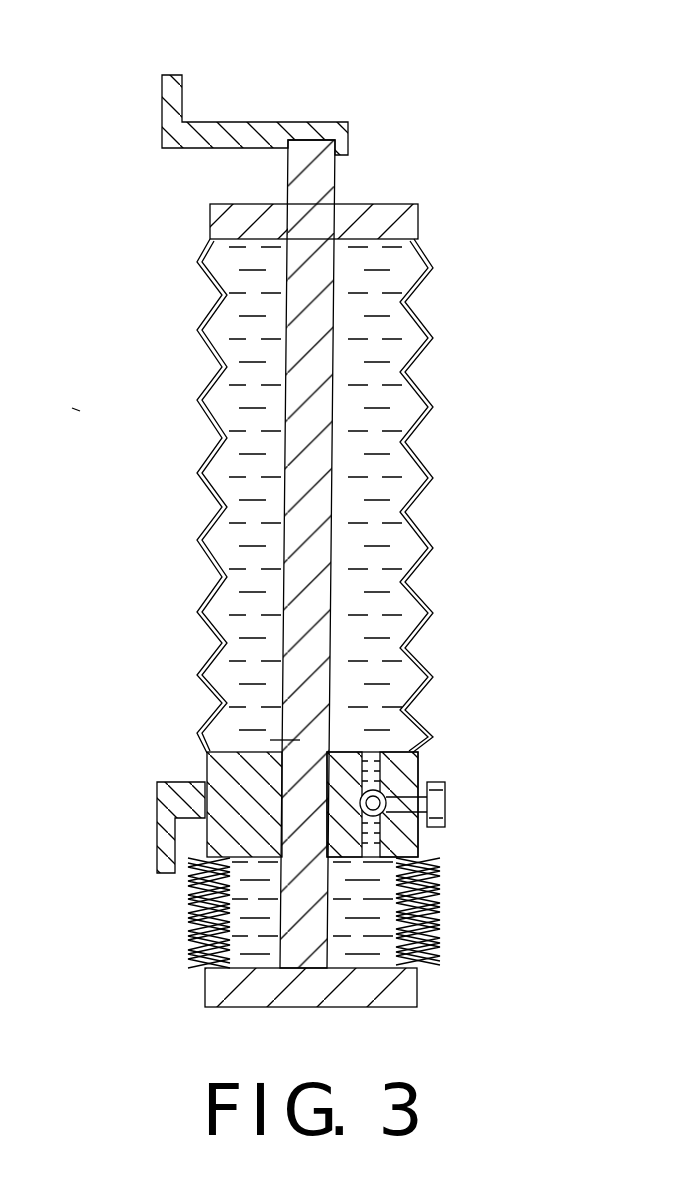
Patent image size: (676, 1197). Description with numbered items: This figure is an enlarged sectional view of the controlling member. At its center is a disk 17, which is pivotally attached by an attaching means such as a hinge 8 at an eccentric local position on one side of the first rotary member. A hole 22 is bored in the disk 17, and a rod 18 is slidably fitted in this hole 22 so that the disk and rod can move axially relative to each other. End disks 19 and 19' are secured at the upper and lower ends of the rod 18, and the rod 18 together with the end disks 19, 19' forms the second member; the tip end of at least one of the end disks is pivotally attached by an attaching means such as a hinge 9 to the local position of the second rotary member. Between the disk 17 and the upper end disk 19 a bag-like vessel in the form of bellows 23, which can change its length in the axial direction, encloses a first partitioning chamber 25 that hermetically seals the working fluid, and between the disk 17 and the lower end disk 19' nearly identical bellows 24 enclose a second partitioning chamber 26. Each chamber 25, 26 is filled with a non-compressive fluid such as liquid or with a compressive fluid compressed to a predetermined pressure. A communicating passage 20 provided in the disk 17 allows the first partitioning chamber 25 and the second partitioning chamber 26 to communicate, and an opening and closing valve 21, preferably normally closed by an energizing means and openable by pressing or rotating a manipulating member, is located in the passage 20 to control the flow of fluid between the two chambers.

The hinge 8 is at (157, 845).
The hinge 9 is at (162, 100).
The disk 17 is at (218, 772).
The rod 18 is at (318, 597).
The end disk 19 is at (365, 194).
The end disk 19' is at (354, 1017).
The communicating passage 20 is at (384, 838).
The opening and closing valve 21 is at (437, 782).
The hole 22 is at (307, 748).
The bellows 23 is at (425, 310).
The bellows 24 is at (430, 910).
The first partitioning chamber 25 is at (220, 438).
The second partitioning chamber 26 is at (245, 922).